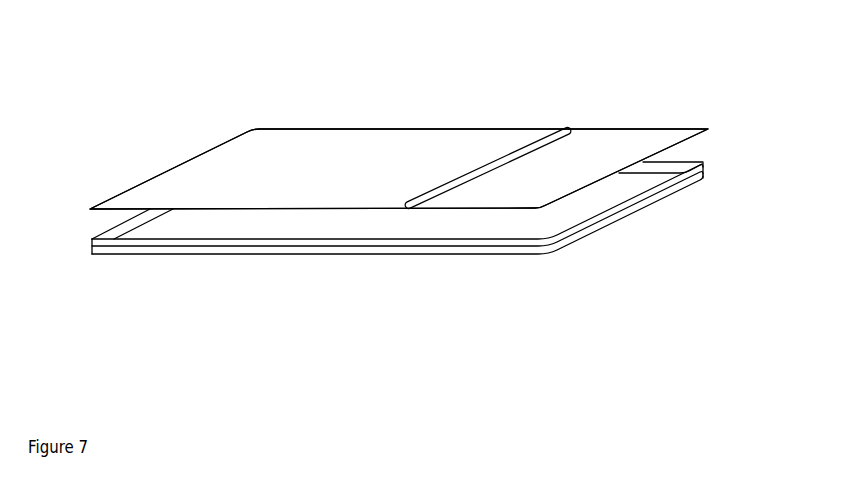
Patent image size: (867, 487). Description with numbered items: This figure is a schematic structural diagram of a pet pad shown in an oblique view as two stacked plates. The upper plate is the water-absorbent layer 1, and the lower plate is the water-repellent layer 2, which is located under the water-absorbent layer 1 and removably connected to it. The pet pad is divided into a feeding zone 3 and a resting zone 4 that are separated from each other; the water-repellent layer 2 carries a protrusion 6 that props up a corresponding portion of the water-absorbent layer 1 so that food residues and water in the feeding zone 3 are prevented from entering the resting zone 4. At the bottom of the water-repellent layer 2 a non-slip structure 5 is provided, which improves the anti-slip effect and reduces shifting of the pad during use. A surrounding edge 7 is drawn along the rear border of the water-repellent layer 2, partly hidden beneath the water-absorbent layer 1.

The water-absorbent layer 1 is at (266, 157).
The water-repellent layer 2 is at (270, 219).
The feeding zone 3 is at (613, 145).
The resting zone 4 is at (348, 145).
The non-slip structure 5 is at (312, 255).
The protrusion 6 is at (472, 177).
The surrounding edge 7 is at (633, 200).